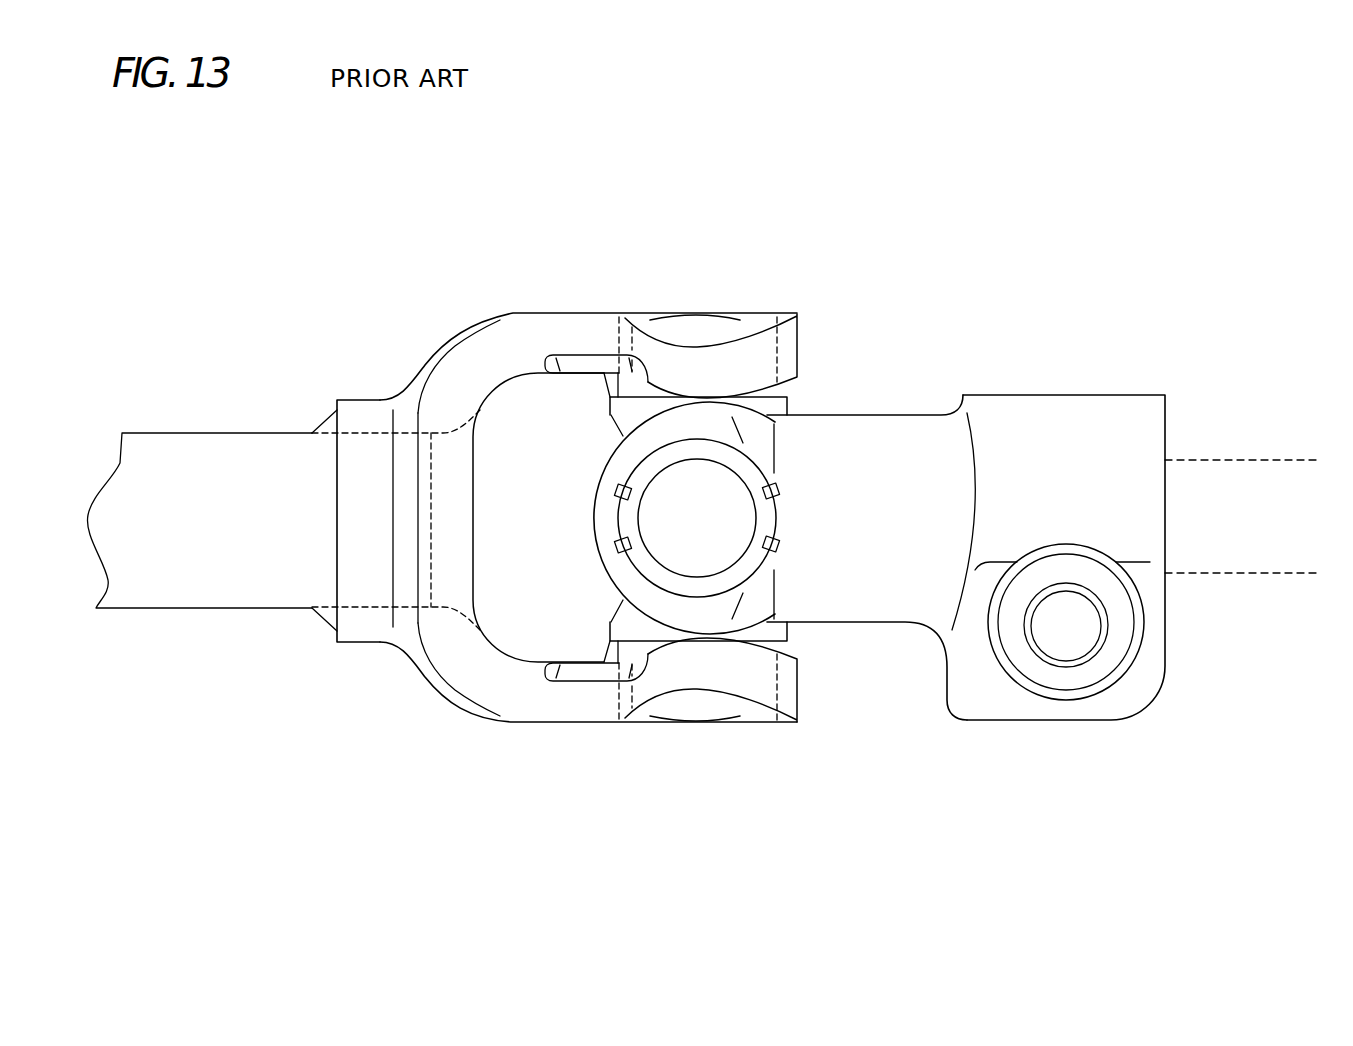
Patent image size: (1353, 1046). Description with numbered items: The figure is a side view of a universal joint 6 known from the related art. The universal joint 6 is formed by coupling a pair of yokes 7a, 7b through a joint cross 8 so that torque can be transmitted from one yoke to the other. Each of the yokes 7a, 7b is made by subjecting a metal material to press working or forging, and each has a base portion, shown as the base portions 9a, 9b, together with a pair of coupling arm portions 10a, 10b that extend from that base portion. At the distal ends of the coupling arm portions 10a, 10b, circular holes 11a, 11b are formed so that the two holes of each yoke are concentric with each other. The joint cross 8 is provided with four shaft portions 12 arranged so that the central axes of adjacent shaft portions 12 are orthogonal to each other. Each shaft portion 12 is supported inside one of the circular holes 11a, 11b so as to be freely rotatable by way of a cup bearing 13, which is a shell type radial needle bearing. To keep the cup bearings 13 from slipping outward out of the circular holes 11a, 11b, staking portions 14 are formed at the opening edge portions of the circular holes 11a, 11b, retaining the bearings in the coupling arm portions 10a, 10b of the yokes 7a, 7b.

The universal joint 6 is at (751, 519).
The yoke 7a is at (1002, 406).
The yoke 7b is at (452, 365).
The joint cross 8 is at (618, 436).
The base portion 9a is at (1142, 443).
The base portion 9b is at (377, 414).
The coupling arm portion 10a is at (825, 442).
The coupling arm portion 10b is at (582, 332).
The circular hole 11a is at (652, 572).
The circular hole 11b is at (777, 374).
The shaft portion 12 is at (682, 367).
The cup bearing 13 is at (697, 316).
The staking portion 14 is at (612, 488).